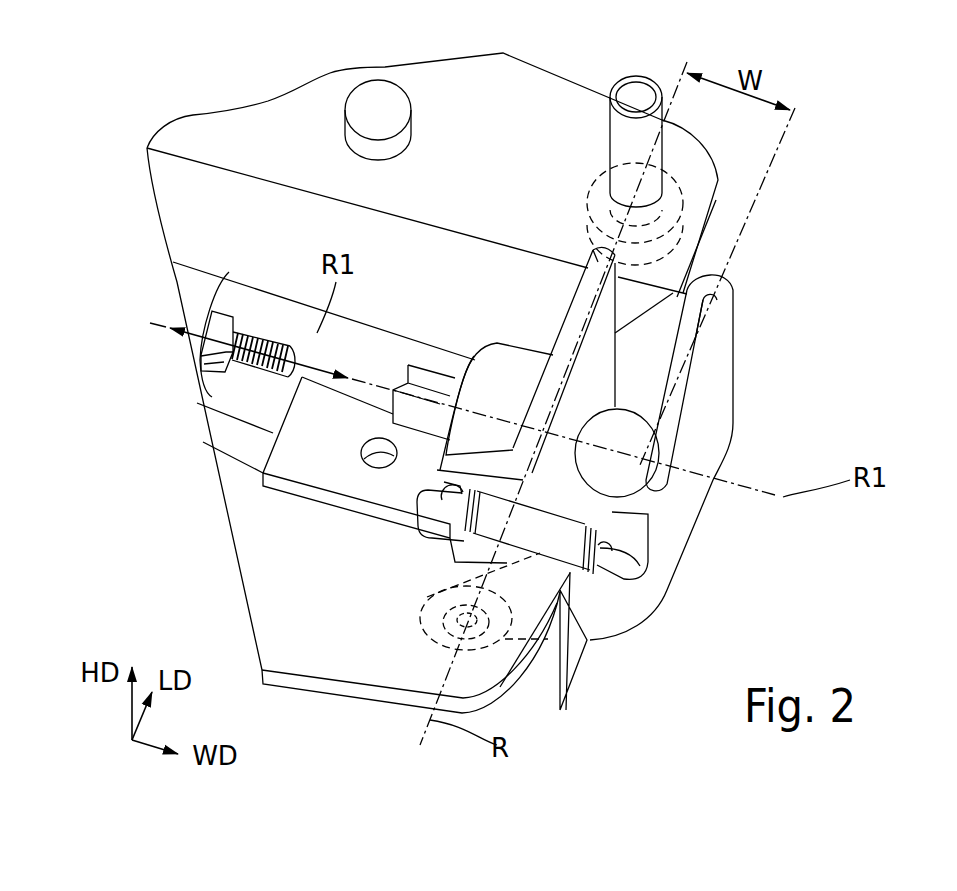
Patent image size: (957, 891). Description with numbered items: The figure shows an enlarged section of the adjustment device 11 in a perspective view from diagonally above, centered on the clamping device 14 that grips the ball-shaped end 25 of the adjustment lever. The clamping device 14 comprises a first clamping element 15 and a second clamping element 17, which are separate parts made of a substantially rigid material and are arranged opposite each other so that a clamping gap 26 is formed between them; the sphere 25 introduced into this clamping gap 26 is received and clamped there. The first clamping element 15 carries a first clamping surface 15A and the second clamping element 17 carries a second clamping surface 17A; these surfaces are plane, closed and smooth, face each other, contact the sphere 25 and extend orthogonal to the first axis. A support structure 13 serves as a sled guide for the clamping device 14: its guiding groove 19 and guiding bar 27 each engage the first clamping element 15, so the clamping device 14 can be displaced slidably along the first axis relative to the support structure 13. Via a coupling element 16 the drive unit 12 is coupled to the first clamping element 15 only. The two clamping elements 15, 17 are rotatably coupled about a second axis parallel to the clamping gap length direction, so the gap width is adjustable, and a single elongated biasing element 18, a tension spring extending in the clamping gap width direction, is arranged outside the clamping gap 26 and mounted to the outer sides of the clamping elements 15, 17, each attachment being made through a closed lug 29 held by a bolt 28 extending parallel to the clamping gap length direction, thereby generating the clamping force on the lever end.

The adjustment device 11 is at (100, 157).
The drive unit 12 is at (193, 288).
The support structure 13 is at (555, 100).
The clamping device 14 is at (712, 252).
The first clamping element 15 is at (508, 373).
The first clamping surface 15A is at (614, 300).
The coupling element 16 is at (420, 385).
The second clamping element 17 is at (708, 445).
The second clamping surface 17A is at (676, 376).
The biasing element 18 is at (488, 532).
The guiding groove 19 is at (196, 225).
The ball-shaped end 25 is at (625, 420).
The clamping gap 26 is at (582, 514).
The guiding bar 27 is at (220, 423).
The bolt 28 is at (437, 520).
The closed lug 29 is at (447, 482).